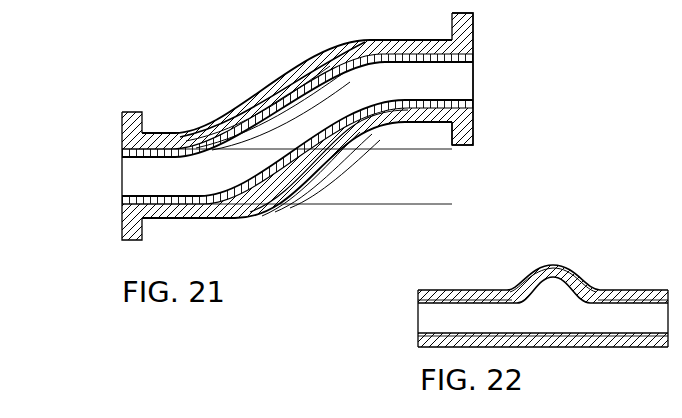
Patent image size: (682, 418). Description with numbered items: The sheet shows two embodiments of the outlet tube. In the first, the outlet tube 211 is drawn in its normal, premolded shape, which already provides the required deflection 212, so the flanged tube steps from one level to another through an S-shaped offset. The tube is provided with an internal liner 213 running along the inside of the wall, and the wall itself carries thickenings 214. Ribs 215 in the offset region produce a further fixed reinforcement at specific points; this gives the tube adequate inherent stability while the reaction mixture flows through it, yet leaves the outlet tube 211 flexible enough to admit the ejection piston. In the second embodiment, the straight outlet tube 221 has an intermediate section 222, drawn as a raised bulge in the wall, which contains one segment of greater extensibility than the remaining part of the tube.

In FIG. 21, the outlet tube 211 is at (310, 126).
In FIG. 21, the deflection 212 is at (322, 176).
In FIG. 21, the internal liner 213 is at (445, 100).
In FIG. 21, the thickenings 214 is at (362, 50).
In FIG. 21, the ribs 215 is at (256, 97).
In FIG. 22, the outlet tube 221 is at (603, 337).
In FIG. 22, the intermediate section 222 is at (522, 282).